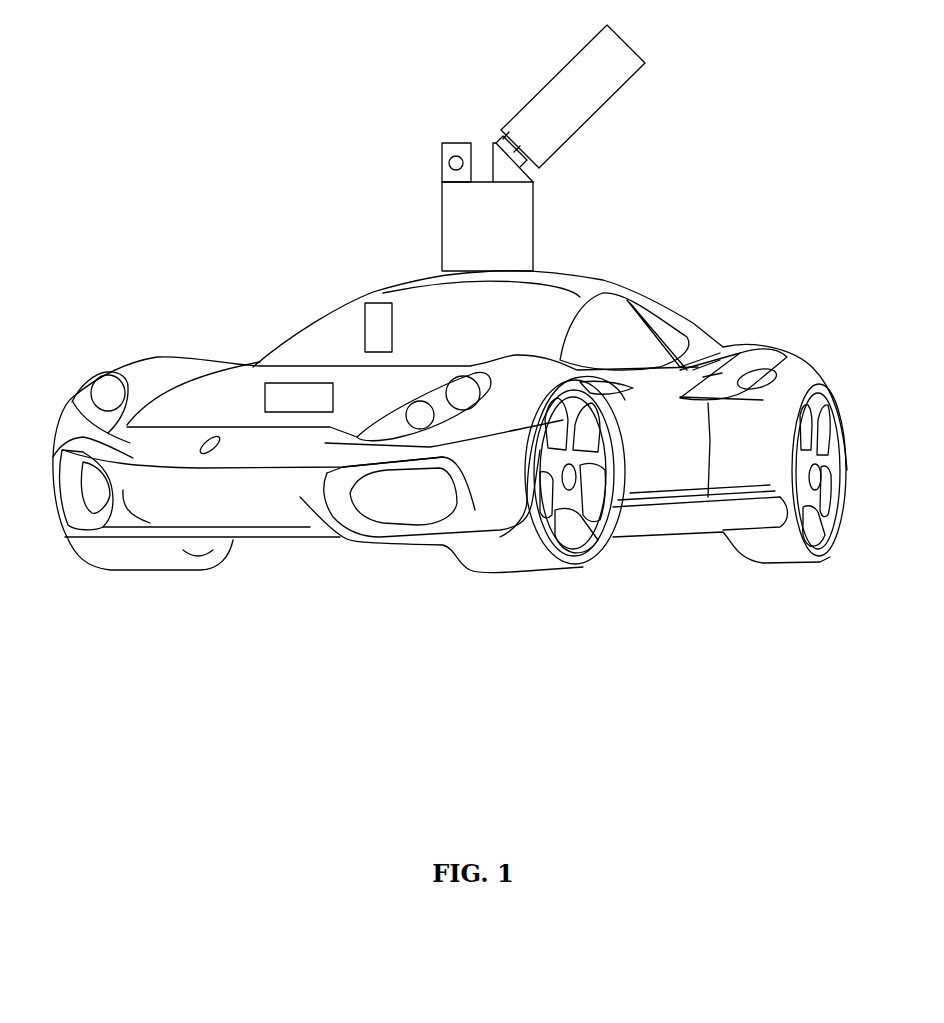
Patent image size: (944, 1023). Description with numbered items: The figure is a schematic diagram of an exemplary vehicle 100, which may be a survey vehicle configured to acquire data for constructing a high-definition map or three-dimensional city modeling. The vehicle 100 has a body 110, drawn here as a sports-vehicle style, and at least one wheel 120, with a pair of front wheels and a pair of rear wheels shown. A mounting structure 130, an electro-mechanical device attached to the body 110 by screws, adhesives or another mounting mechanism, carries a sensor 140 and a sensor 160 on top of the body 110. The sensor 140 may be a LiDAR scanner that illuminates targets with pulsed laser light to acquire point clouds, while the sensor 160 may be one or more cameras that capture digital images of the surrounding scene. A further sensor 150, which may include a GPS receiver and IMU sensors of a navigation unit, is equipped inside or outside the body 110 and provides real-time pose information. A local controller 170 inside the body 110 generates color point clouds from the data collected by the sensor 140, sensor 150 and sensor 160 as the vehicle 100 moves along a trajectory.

The vehicle 100 is at (450, 366).
The body 110 is at (274, 281).
The wheel 120 is at (610, 558).
The mounting structure 130 is at (549, 229).
The sensor 140 is at (509, 89).
The sensor 150 is at (355, 294).
The sensor 160 is at (428, 122).
The local controller 170 is at (256, 371).